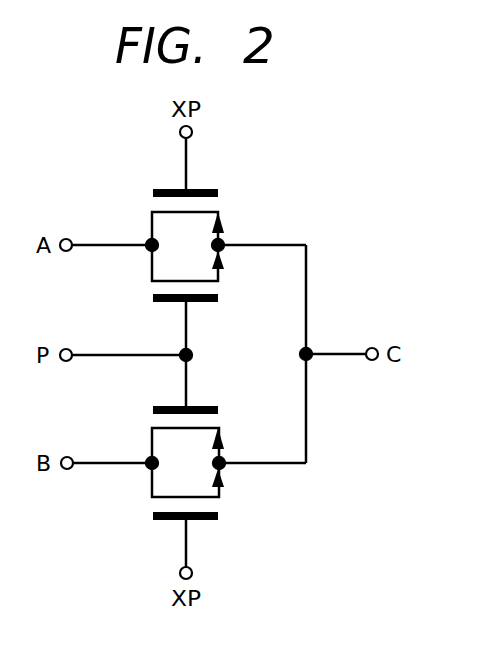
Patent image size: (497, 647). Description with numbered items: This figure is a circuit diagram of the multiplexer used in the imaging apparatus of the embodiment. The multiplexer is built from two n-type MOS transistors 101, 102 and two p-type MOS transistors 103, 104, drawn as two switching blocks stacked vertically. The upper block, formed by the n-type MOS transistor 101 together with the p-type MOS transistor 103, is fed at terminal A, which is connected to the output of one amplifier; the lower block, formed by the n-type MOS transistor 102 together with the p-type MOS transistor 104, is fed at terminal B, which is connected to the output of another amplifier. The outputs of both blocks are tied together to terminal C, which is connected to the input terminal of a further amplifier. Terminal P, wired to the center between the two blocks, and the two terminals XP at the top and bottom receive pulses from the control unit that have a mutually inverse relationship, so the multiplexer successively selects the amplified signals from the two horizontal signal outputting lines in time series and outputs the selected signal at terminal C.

The n-type MOS transistor 101 is at (223, 272).
The n-type MOS transistor 102 is at (224, 490).
The p-type MOS transistor 103 is at (226, 222).
The p-type MOS transistor 104 is at (226, 437).